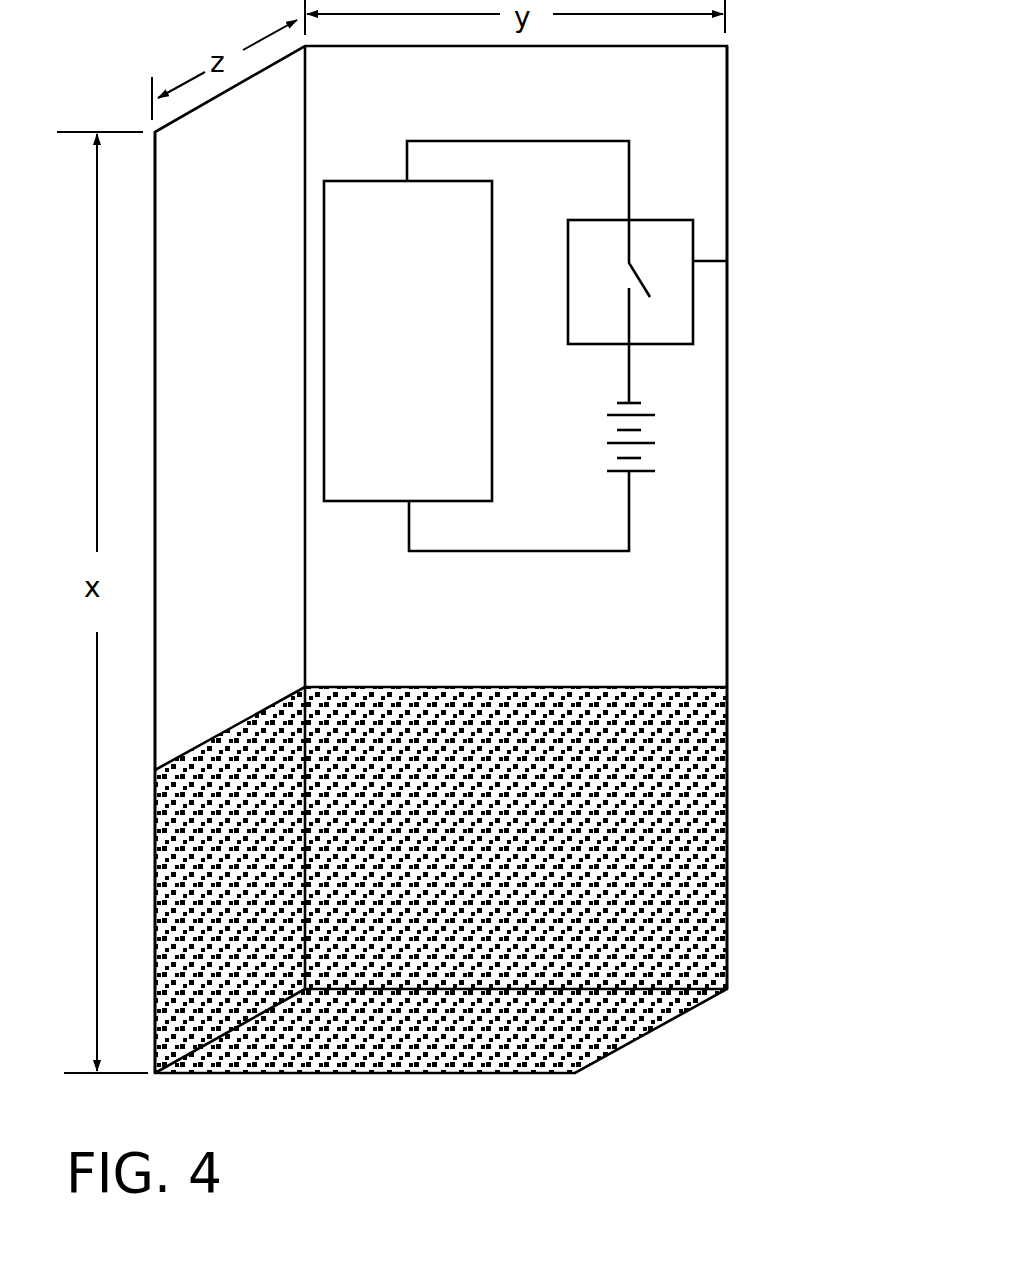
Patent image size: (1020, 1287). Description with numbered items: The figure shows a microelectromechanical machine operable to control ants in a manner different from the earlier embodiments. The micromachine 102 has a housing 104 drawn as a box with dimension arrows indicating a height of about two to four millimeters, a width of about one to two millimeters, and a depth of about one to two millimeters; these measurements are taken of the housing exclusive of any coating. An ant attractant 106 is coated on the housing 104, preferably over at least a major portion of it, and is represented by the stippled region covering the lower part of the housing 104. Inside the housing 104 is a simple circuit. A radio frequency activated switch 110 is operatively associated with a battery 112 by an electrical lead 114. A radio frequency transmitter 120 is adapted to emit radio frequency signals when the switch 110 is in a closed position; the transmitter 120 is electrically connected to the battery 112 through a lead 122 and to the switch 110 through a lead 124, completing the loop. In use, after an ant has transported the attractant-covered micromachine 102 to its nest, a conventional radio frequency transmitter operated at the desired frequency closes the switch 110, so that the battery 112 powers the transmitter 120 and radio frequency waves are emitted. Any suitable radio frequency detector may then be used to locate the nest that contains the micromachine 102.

The micromachine 102 is at (200, 100).
The housing 104 is at (725, 175).
The ant attractant 106 is at (693, 828).
The radio frequency activated switch 110 is at (725, 261).
The battery 112 is at (642, 476).
The electrical lead 114 is at (632, 376).
The radio frequency transmitter 120 is at (440, 368).
The lead 122 is at (585, 552).
The lead 124 is at (578, 140).